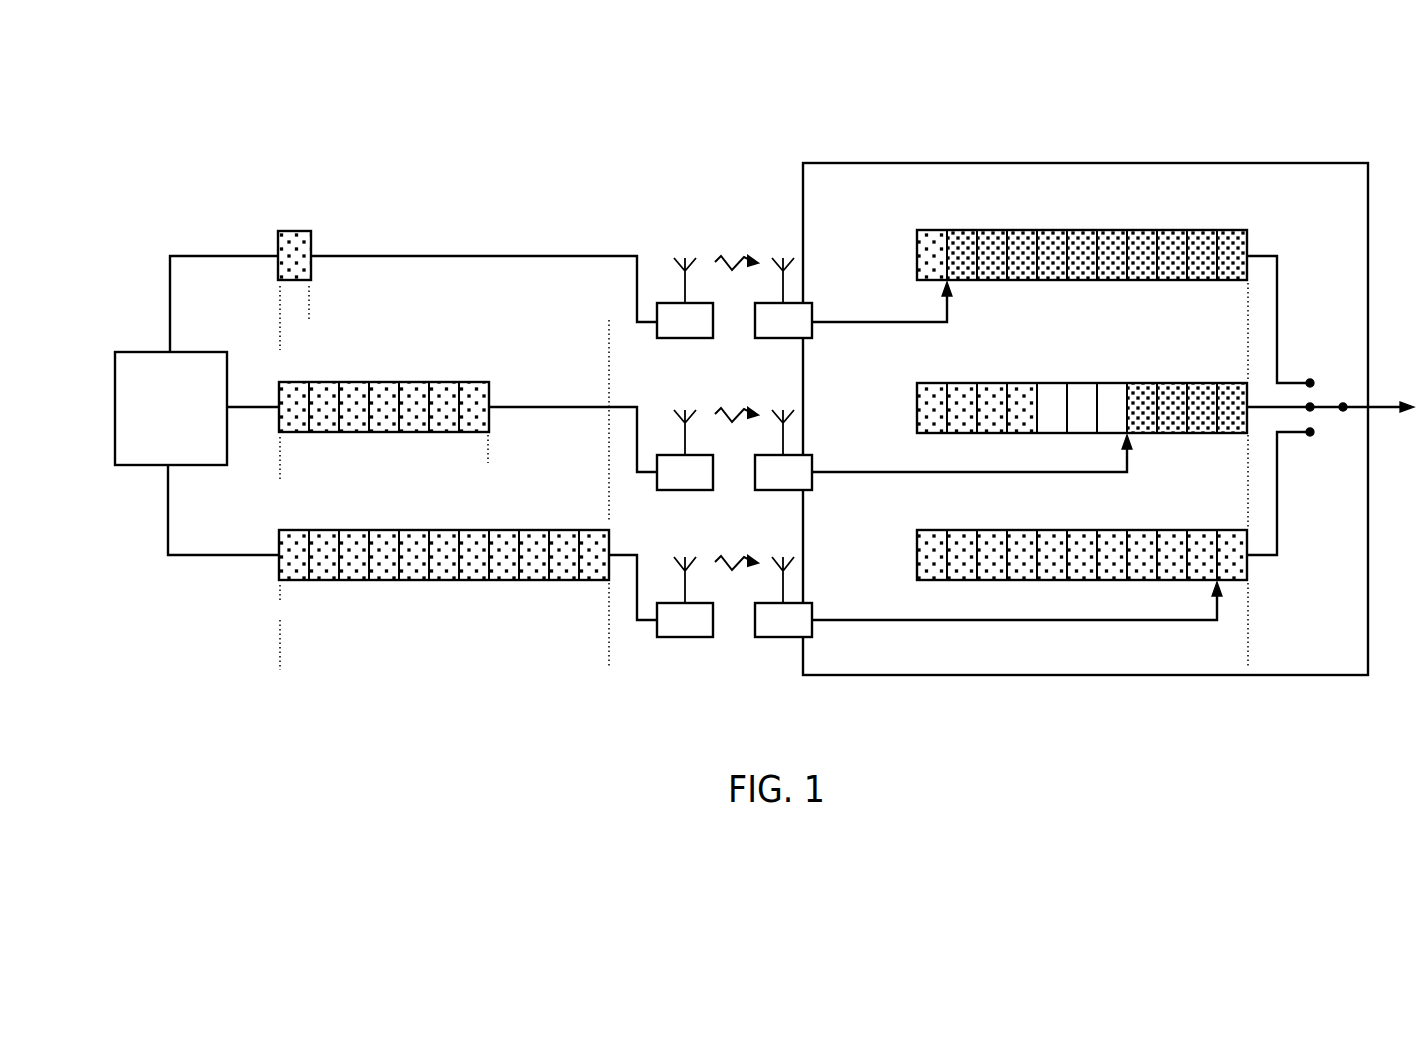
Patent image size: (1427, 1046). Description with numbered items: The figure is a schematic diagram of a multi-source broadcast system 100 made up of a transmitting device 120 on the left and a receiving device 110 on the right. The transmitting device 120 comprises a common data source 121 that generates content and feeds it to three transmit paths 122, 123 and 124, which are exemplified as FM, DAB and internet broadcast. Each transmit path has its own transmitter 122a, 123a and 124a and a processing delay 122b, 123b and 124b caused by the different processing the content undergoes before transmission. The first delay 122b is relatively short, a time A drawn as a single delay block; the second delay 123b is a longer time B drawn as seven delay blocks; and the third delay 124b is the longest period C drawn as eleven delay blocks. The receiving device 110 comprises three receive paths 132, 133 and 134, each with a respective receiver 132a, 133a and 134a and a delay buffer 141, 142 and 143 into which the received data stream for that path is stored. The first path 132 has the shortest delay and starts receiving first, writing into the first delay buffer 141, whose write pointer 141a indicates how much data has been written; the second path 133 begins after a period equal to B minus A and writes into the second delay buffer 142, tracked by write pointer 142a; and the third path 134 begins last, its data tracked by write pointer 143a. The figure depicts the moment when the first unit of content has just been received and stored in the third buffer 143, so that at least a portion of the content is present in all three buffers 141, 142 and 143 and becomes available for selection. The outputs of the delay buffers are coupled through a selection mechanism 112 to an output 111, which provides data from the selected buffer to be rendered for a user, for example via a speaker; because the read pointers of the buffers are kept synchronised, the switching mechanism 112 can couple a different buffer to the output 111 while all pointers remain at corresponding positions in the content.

The multi-source broadcast system 100 is at (1197, 708).
The receiving device 110 is at (1108, 144).
The output 111 is at (1383, 410).
The selection mechanism 112 is at (1327, 412).
The transmitting device 120 is at (392, 152).
The common data source 121 is at (157, 467).
The first transmit path 122 is at (485, 237).
The transmitter 122a is at (685, 340).
The first delay 122b is at (320, 214).
The second transmit path 123 is at (575, 387).
The transmitter 123a is at (685, 492).
The second delay 123b is at (405, 362).
The third transmit path 124 is at (235, 556).
The transmitter 124a is at (685, 639).
The third delay 124b is at (465, 512).
The first receive path 132 is at (878, 324).
The receiver 132a is at (783, 340).
The second receive path 133 is at (878, 474).
The receiver 133a is at (783, 492).
The third receive path 134 is at (878, 622).
The receiver 134a is at (783, 639).
The first delay buffer 141 is at (1082, 230).
The write pointer 141a is at (950, 300).
The second delay buffer 142 is at (1082, 383).
The write pointer 142a is at (1130, 460).
The third delay buffer 143 is at (1082, 530).
The write pointer 143a is at (1220, 610).